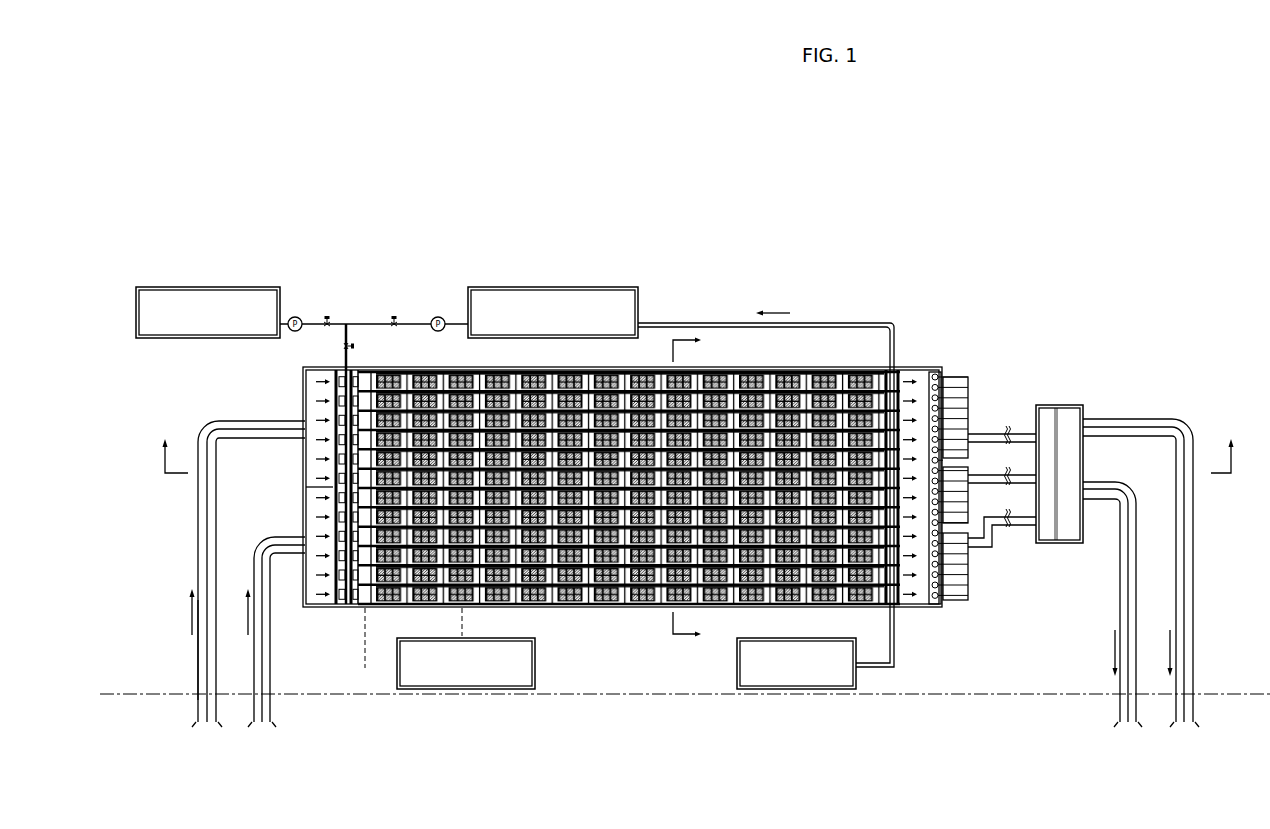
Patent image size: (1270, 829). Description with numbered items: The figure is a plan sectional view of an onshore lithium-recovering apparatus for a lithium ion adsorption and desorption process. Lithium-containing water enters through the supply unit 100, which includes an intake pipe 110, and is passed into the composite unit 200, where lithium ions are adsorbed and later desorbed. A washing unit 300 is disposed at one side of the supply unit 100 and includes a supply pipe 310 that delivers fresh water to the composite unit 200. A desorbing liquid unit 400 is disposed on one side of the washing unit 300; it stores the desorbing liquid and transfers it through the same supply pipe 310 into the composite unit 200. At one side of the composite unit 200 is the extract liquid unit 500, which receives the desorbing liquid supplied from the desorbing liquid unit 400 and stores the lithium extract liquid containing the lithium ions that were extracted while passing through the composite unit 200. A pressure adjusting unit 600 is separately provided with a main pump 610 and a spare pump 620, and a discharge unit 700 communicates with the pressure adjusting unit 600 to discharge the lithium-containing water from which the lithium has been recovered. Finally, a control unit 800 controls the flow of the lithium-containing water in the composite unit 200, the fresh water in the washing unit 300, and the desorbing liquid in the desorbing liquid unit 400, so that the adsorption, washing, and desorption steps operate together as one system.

The supply unit 100 is at (181, 535).
The intake pipe 110 is at (197, 650).
The composite unit 200 is at (339, 623).
The washing unit 300 is at (236, 288).
The supply pipe 310 is at (346, 357).
The desorbing liquid unit 400 is at (585, 288).
The extract liquid unit 500 is at (803, 690).
The pressure adjusting unit 600 is at (987, 497).
The main pump 610 is at (934, 605).
The spare pump 620 is at (946, 374).
The discharge unit 700 is at (1082, 404).
The control unit 800 is at (471, 690).